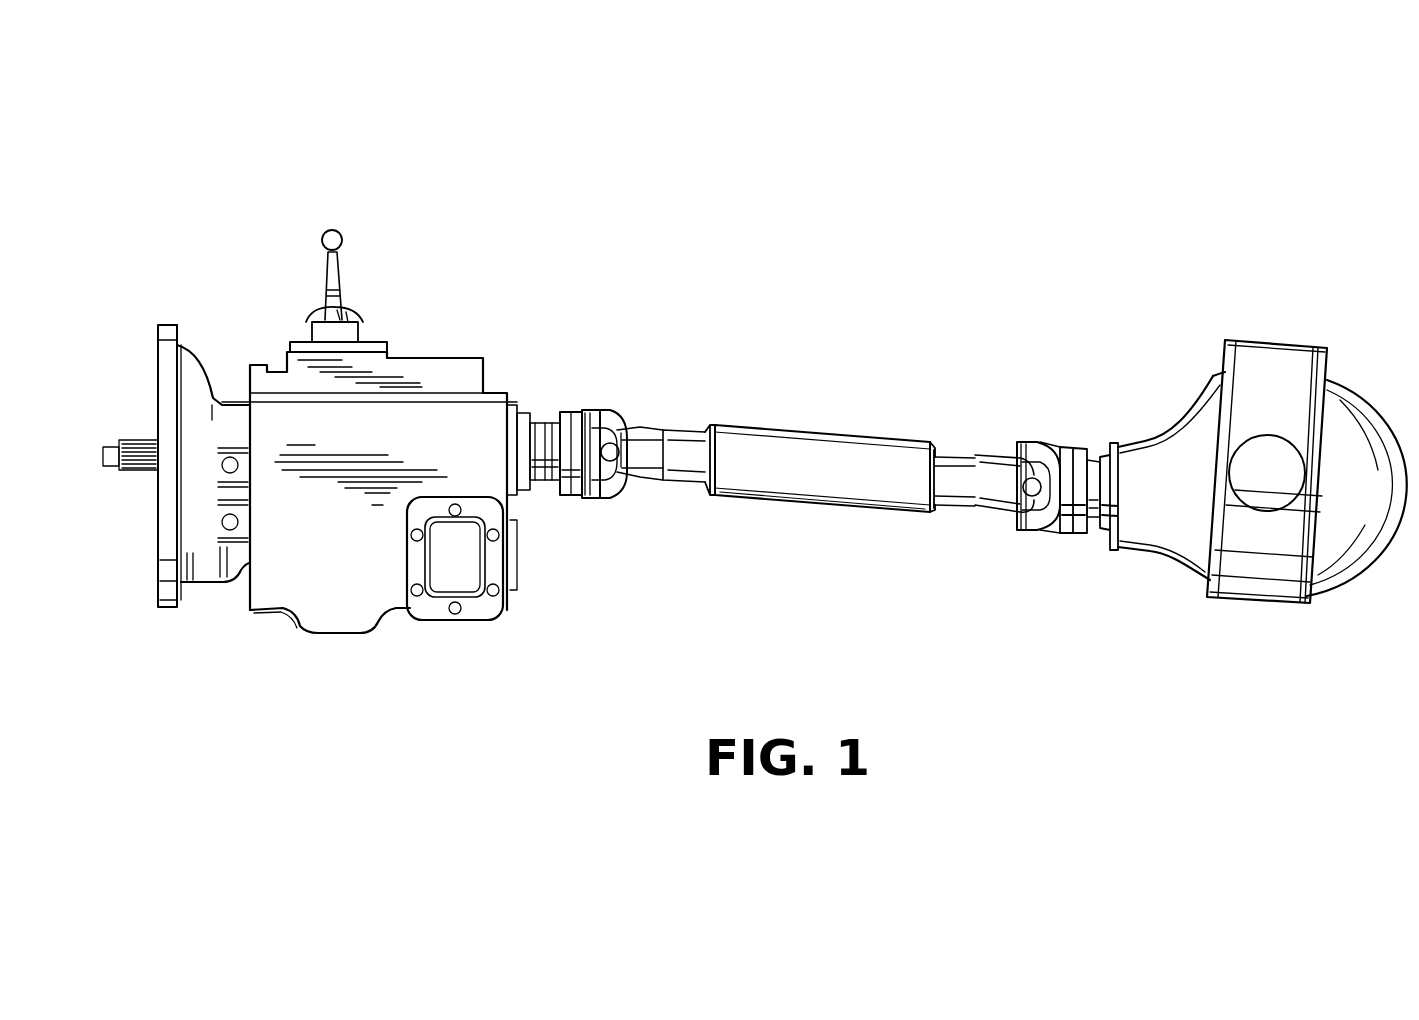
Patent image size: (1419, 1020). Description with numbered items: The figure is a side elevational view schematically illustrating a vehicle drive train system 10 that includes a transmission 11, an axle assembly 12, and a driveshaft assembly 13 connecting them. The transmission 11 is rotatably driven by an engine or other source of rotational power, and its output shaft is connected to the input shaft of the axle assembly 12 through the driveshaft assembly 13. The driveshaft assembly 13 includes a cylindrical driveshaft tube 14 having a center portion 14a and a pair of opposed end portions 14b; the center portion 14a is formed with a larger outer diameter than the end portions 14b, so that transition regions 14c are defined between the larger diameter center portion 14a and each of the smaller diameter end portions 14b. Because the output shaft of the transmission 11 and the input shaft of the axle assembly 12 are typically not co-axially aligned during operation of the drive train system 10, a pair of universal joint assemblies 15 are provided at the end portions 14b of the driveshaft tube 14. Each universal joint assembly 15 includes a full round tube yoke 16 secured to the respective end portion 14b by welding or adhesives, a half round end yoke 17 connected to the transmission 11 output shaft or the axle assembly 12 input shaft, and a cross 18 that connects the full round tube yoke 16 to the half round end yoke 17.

The vehicle drive train system 10 is at (375, 160).
The transmission 11 is at (328, 617).
The axle assembly 12 is at (1250, 592).
The driveshaft assembly 13 is at (1090, 322).
The driveshaft tube 14 is at (765, 405).
The center portion 14a is at (842, 480).
The end portions 14b is at (682, 428).
The transition regions 14c is at (680, 498).
The universal joint assembly 15 is at (600, 400).
The full round tube yoke 16 is at (657, 430).
The half round end yoke 17 is at (600, 500).
The cross 18 is at (640, 490).